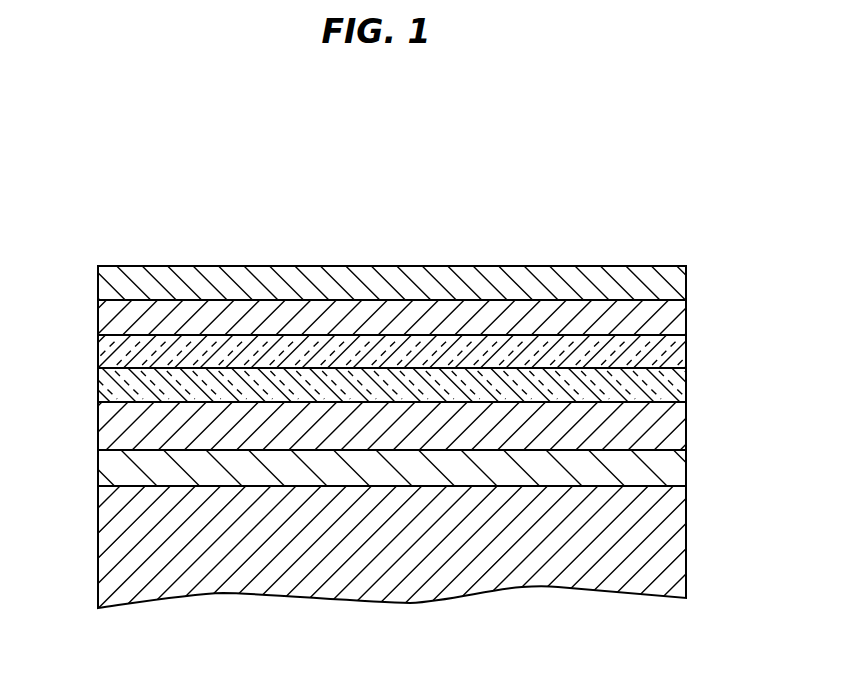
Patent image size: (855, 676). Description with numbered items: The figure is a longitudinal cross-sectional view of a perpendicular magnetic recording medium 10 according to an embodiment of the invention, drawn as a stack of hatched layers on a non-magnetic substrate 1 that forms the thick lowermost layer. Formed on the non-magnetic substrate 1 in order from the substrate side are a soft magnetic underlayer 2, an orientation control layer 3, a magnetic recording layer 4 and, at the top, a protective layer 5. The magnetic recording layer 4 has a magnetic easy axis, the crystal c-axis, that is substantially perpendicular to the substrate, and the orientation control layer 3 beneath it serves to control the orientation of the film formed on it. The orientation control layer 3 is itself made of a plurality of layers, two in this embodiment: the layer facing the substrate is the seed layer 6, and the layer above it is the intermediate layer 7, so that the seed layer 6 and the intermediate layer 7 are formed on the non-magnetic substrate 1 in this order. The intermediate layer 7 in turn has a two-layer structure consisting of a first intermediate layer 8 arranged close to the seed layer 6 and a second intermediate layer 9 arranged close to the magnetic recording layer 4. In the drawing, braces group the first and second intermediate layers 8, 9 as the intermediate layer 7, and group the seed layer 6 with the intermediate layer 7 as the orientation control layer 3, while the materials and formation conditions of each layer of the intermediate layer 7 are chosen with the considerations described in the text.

The non-magnetic substrate 1 is at (677, 523).
The soft magnetic underlayer 2 is at (665, 470).
The orientation control layer 3 is at (443, 389).
The magnetic recording layer 4 is at (663, 317).
The protective layer 5 is at (662, 283).
The seed layer 6 is at (677, 422).
The intermediate layer 7 is at (435, 365).
The first intermediate layer 8 is at (668, 385).
The second intermediate layer 9 is at (668, 348).
The perpendicular magnetic recording medium 10 is at (80, 235).